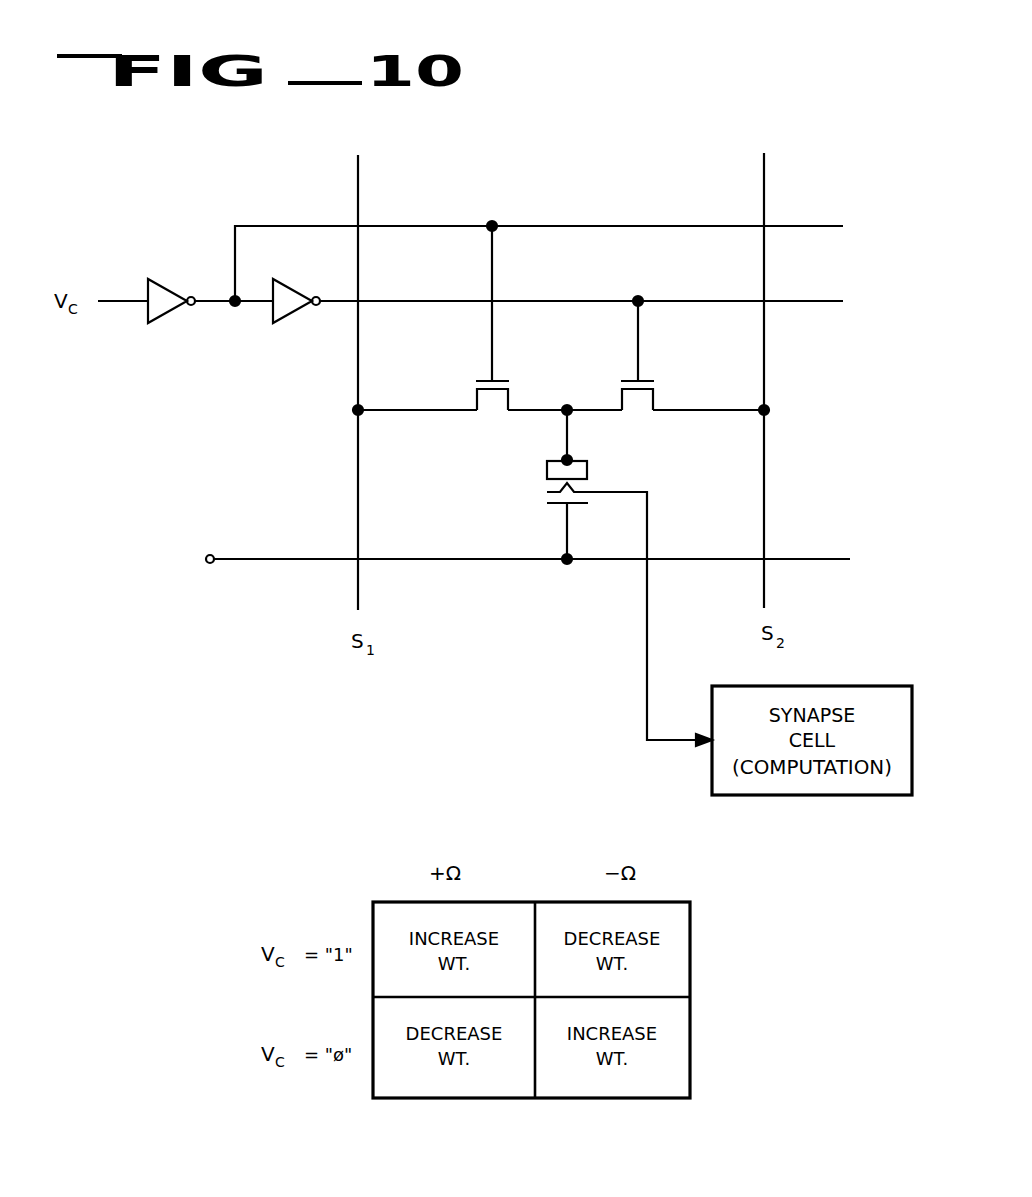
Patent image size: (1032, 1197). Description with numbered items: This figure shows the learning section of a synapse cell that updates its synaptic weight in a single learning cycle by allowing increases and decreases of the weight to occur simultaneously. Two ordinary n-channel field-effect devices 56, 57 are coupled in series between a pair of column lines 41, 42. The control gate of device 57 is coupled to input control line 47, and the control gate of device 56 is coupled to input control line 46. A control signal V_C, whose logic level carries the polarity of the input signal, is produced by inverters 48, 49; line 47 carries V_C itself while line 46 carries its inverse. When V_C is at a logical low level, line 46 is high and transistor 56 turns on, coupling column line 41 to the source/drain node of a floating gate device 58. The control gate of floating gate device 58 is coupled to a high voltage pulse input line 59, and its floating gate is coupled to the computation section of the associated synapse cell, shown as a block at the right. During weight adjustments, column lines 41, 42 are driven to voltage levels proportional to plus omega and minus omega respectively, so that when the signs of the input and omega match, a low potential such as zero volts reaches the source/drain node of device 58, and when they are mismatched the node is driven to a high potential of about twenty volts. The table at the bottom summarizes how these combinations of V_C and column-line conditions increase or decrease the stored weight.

The column line 41 is at (355, 184).
The column line 42 is at (766, 185).
The input control line 46 is at (828, 226).
The input control line 47 is at (828, 301).
The inverter 48 is at (172, 312).
The inverter 49 is at (302, 312).
The n-channel field-effect device 56 is at (494, 406).
The n-channel field-effect device 57 is at (636, 406).
The floating gate device 58 is at (545, 493).
The high voltage pulse input line 59 is at (287, 562).